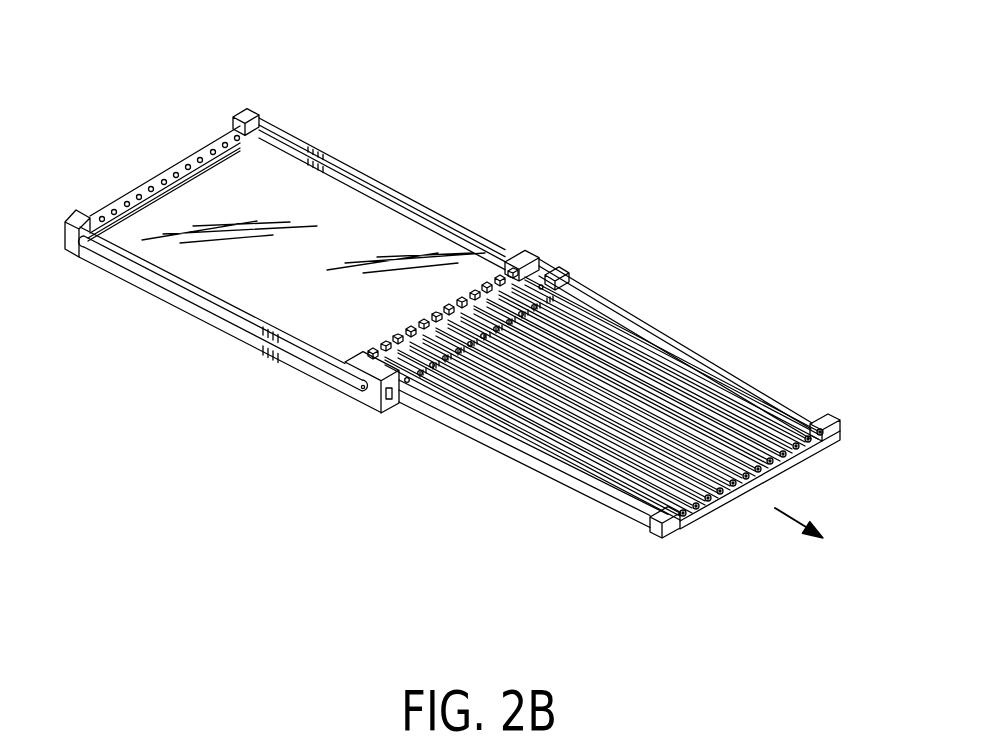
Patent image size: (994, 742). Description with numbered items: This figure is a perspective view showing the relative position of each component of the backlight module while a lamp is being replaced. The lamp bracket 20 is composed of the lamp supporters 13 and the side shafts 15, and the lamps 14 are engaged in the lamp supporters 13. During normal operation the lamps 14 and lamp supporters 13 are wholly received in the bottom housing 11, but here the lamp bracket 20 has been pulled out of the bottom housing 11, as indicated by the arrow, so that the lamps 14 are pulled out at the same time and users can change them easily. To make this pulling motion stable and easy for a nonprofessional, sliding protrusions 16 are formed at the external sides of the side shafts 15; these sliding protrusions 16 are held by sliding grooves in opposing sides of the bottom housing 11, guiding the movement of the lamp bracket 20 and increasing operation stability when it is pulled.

The bottom housing 11 is at (240, 334).
The lamp supporter 13 is at (519, 262).
The lamp 14 is at (590, 410).
The side shaft 15 is at (582, 307).
The sliding protrusion 16 is at (357, 390).
The lamp bracket 20 is at (624, 382).